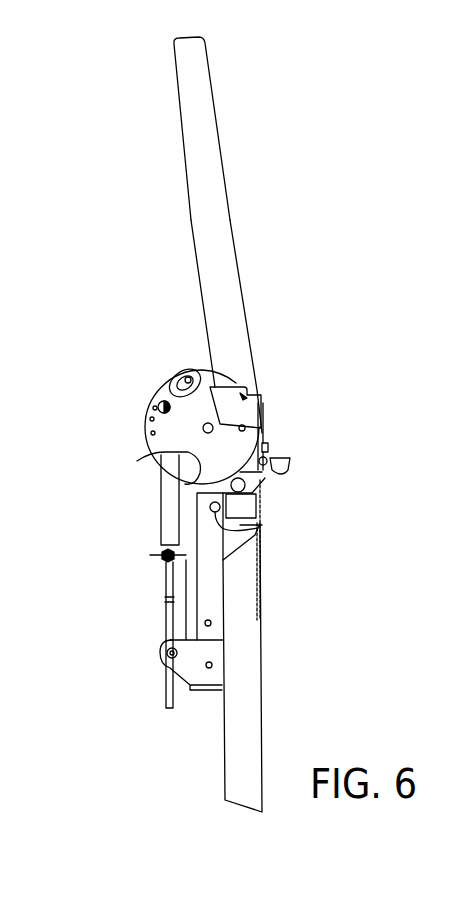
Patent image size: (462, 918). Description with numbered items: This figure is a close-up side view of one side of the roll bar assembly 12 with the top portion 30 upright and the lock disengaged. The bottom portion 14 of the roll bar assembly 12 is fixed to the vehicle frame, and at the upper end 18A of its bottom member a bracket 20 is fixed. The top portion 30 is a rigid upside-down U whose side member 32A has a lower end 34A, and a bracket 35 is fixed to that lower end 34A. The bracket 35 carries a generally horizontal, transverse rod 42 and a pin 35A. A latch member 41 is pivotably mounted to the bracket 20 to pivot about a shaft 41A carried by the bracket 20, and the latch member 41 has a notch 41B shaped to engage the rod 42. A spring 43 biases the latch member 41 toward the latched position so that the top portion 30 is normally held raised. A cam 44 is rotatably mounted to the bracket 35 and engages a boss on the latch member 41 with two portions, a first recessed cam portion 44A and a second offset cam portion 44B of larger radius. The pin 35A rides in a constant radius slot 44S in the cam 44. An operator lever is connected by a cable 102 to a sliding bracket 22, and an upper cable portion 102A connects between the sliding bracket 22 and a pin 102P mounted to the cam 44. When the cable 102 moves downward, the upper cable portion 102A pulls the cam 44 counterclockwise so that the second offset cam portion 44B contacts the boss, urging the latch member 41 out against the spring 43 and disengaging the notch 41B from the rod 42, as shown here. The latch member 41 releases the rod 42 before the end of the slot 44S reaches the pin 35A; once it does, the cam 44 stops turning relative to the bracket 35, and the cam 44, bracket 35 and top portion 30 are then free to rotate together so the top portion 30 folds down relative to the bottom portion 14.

The roll bar assembly 12 is at (371, 236).
The bottom portion 14 is at (297, 660).
The upper end 18A is at (267, 552).
The bracket 20 is at (212, 640).
The sliding bracket 22 is at (160, 557).
The top portion 30 is at (244, 53).
The side member 32A is at (210, 155).
The lower end 34A is at (252, 318).
The bracket 35 is at (257, 397).
The pin 35A is at (183, 372).
The latch member 41 is at (270, 470).
The shaft 41A is at (263, 525).
The notch 41B is at (290, 474).
The rod 42 is at (270, 443).
The spring 43 is at (267, 500).
The cam 44 is at (177, 427).
The first recessed cam portion 44A is at (263, 407).
The second offset cam portion 44B is at (137, 461).
The slot 44S is at (202, 362).
The cable 102 is at (168, 692).
The upper cable portion 102A is at (165, 527).
The pin 102P is at (163, 400).